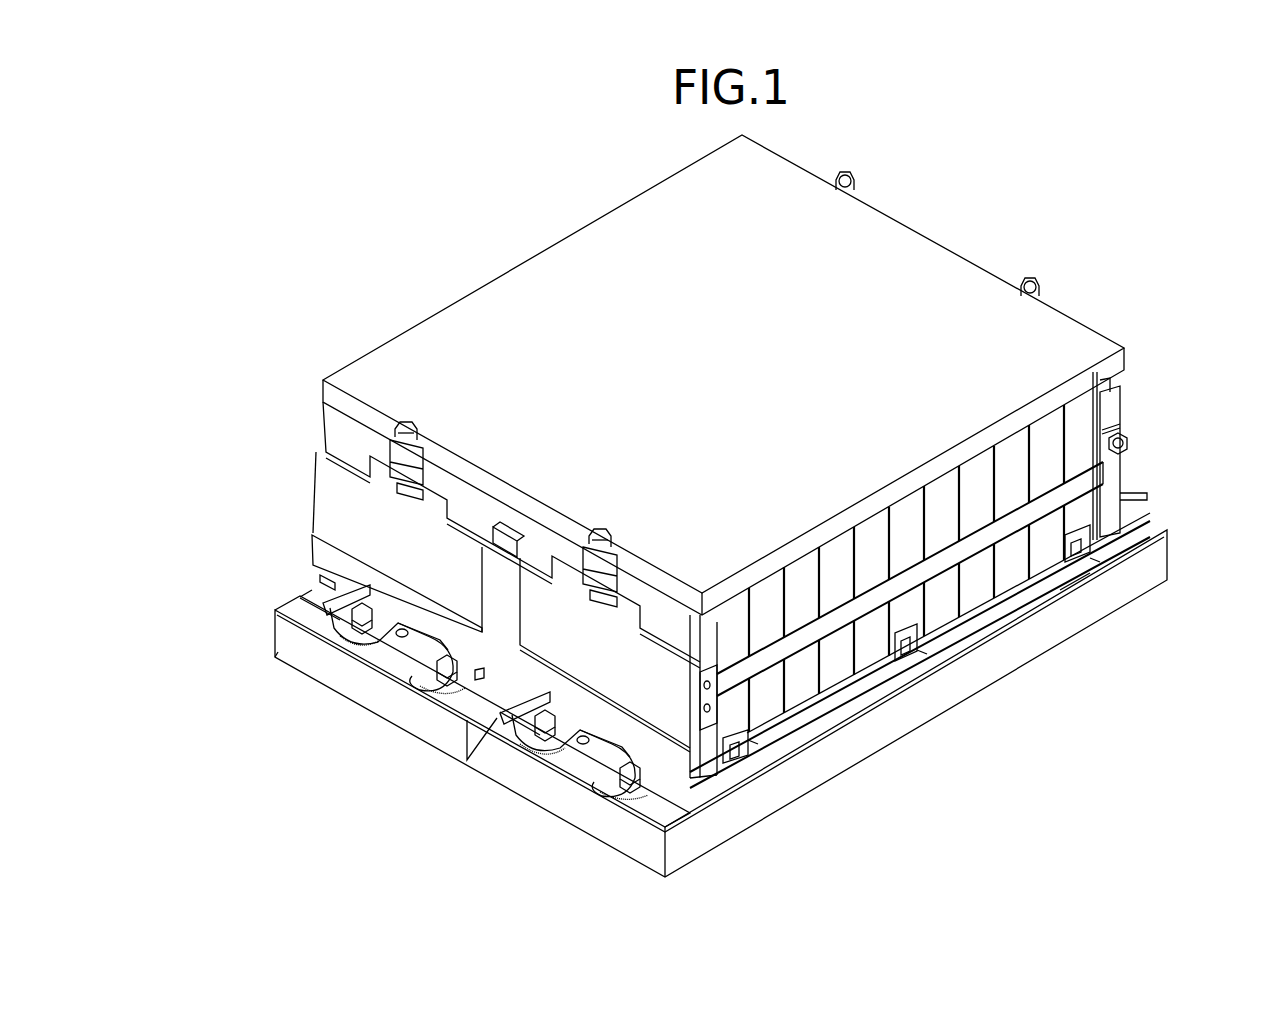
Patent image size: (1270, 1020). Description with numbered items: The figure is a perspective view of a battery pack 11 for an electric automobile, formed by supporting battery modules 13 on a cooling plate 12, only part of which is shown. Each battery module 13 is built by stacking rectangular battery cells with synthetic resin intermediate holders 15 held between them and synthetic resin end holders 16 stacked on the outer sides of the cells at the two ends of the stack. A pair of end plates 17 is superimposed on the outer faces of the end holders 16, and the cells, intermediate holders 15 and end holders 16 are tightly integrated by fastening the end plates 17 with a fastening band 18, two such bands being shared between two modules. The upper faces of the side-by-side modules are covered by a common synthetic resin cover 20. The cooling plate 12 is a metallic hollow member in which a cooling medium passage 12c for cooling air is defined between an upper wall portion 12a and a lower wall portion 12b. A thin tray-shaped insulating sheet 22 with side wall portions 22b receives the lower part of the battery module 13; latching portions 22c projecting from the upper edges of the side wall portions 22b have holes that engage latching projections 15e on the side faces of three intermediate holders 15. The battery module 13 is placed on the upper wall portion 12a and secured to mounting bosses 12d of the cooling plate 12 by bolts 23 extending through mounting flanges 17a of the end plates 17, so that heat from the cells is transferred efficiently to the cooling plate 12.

The battery pack 11 is at (518, 225).
The cooling plate 12 is at (1014, 678).
The upper wall portion 12a is at (678, 805).
The lower wall portion 12b is at (432, 715).
The cooling medium passage 12c is at (535, 790).
The mounting boss 12d is at (386, 640).
The battery module 13 is at (316, 413).
The intermediate holder 15 is at (805, 565).
The latching projection 15e is at (745, 758).
The end holder 16 is at (360, 432).
The end plate 17 is at (465, 520).
The mounting flange 17a is at (345, 620).
The fastening band 18 is at (840, 612).
The cover 20 is at (915, 255).
The insulating sheet 22 is at (826, 714).
The side wall portion 22b is at (1010, 610).
The latching portion 22c is at (770, 742).
The bolt 23 is at (445, 665).